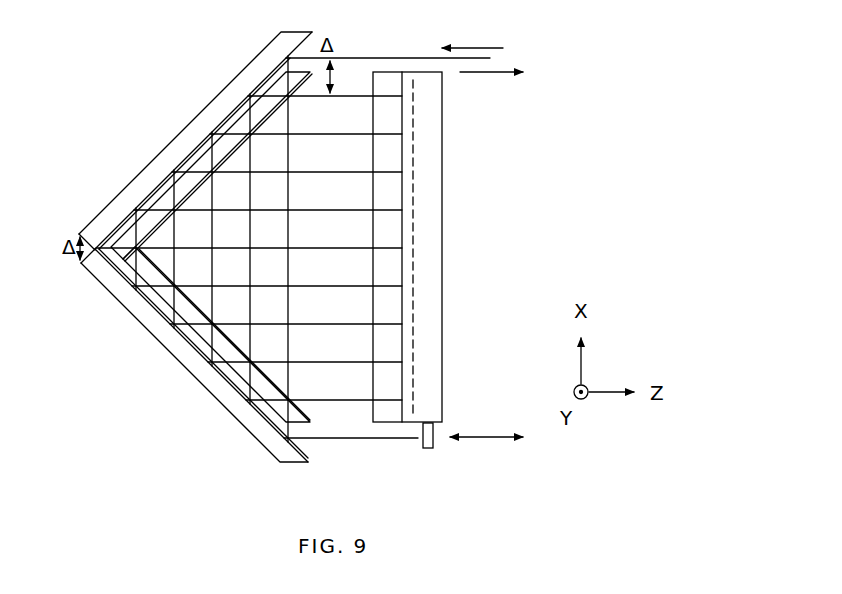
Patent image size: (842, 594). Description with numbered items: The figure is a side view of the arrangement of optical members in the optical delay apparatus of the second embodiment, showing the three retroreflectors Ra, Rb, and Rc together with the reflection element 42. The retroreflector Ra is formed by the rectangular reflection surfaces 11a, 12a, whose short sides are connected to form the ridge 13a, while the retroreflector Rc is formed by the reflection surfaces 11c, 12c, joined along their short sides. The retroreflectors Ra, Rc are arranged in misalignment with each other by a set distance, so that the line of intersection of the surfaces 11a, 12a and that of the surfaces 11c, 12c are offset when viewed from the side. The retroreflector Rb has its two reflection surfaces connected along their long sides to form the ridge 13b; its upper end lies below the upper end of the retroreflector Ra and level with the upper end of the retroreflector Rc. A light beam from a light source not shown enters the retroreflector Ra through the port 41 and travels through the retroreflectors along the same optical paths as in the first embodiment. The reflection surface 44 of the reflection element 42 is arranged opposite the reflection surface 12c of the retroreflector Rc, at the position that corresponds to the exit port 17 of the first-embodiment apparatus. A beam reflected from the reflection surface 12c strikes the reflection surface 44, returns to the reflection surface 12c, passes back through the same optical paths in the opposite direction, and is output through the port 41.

The reflection surface 11a is at (257, 82).
The reflection surface 11c is at (203, 140).
The reflection surface 12a is at (260, 412).
The reflection surface 12c is at (148, 310).
The ridge 13a is at (93, 222).
The ridge 13b is at (108, 272).
The exit port 17 is at (371, 452).
The port 41 is at (398, 45).
The reflection element 42 is at (428, 450).
The reflection surface 44 is at (423, 442).
The retroreflector Ra is at (138, 168).
The retroreflector Rb is at (443, 153).
The retroreflector Rc is at (170, 360).